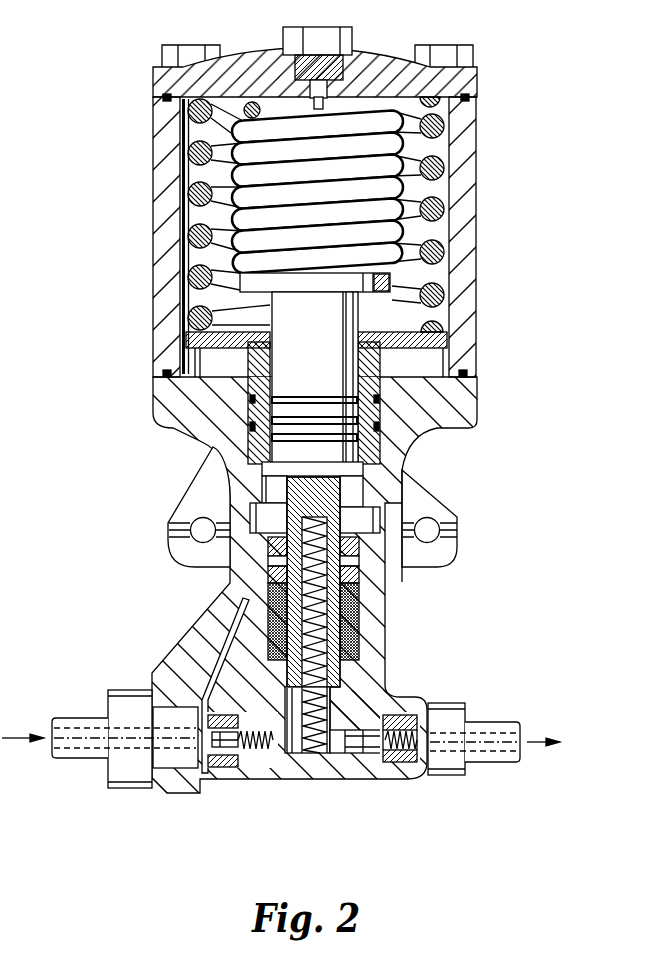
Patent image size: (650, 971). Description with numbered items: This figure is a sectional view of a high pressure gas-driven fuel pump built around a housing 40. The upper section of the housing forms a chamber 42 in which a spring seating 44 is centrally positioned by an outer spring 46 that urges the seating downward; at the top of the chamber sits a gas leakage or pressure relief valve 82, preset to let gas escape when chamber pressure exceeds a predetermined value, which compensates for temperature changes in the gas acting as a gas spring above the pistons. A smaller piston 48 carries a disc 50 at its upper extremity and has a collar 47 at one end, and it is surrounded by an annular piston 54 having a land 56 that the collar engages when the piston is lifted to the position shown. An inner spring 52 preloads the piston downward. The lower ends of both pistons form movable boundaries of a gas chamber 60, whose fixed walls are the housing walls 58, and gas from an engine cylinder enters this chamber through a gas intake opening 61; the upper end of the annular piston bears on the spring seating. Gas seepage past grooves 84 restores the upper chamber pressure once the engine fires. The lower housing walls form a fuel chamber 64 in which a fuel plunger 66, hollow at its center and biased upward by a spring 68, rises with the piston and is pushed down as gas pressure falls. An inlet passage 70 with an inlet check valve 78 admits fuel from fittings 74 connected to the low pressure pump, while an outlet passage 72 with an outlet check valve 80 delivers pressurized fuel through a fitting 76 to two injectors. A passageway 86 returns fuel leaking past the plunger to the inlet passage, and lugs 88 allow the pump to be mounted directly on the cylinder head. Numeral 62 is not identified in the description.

The housing 40 is at (157, 138).
The chamber 42 is at (198, 218).
The spring seating 44 is at (167, 347).
The spring 46 is at (440, 152).
The collar 47 is at (363, 472).
The piston 48 is at (332, 327).
The disc 50 is at (392, 283).
The inner spring 52 is at (400, 236).
The annular piston 54 is at (378, 412).
The land 56 is at (363, 470).
The housing walls 58 is at (382, 520).
The chamber 60 is at (278, 497).
The gas intake opening 61 is at (328, 510).
The valve body 62 is at (396, 568).
The fuel chamber 64 is at (330, 700).
The fuel plunger 66 is at (340, 675).
The spring 68 is at (365, 695).
The inlet passage 70 is at (178, 757).
The outlet passage 72 is at (430, 777).
The fittings 74 is at (72, 717).
The fitting 76 is at (500, 722).
The inlet check valve 78 is at (235, 760).
The outlet check valve 80 is at (408, 777).
The gas leakage valve 82 is at (355, 68).
The grooves 84 is at (298, 400).
The passageway 86 is at (223, 650).
The lugs 88 is at (168, 523).